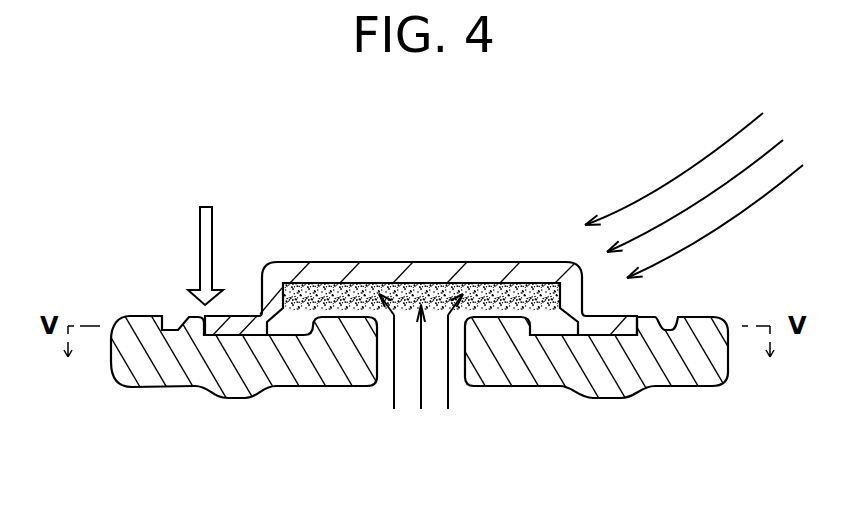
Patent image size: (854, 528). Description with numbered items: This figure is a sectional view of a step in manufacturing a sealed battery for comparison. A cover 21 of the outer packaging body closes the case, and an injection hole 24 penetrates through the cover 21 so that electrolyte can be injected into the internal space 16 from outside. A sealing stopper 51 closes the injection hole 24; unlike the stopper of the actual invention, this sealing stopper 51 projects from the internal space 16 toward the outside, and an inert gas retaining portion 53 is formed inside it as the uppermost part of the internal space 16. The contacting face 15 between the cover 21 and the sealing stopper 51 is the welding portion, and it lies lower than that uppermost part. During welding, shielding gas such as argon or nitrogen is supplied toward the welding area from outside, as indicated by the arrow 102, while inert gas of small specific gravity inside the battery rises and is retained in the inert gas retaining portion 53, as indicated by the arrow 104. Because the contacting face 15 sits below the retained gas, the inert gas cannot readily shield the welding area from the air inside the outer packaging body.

The contacting face 15 is at (421, 271).
The internal space 16 is at (413, 352).
The cover 21 is at (683, 370).
The injection hole 24 is at (462, 360).
The sealing stopper 51 is at (423, 273).
The inert gas retaining portion 53 is at (500, 293).
The arrow indicating shielding gas supply 102 is at (680, 176).
The arrow indicating inert gas retention 104 is at (393, 382).